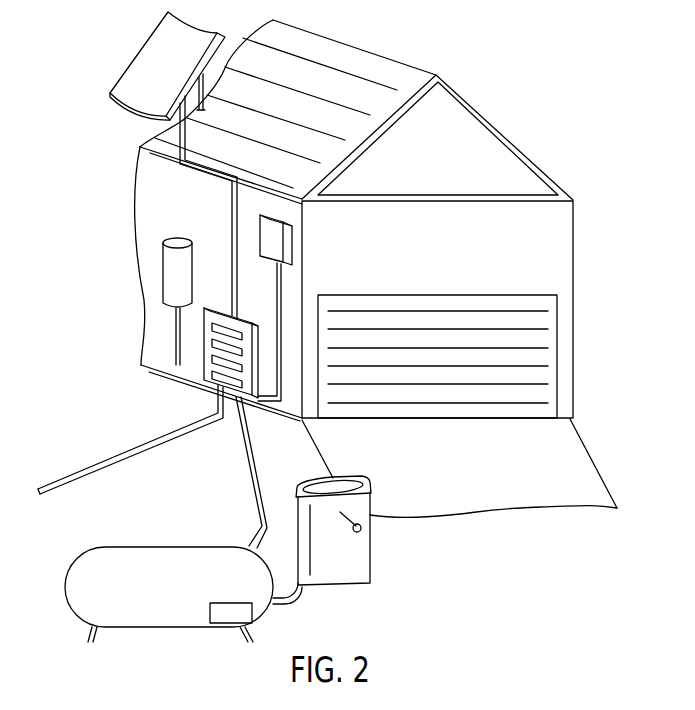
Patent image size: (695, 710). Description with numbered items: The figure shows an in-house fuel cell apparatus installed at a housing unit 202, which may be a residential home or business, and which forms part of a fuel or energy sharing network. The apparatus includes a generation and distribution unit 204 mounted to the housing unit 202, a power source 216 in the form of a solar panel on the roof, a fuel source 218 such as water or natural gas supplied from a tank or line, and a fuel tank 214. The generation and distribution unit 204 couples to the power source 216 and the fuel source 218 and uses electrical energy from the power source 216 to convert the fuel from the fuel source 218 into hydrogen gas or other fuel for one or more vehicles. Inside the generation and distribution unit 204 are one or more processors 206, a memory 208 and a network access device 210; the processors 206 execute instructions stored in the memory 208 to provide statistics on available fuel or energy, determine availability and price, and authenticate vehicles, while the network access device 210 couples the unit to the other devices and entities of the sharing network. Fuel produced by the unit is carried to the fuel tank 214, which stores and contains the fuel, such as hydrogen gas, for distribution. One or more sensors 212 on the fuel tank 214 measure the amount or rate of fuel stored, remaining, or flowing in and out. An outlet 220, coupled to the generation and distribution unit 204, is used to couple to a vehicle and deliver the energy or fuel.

The housing unit 202 is at (510, 141).
The generation and distribution unit 204 is at (180, 347).
The processors 206 is at (212, 327).
The memory 208 is at (212, 357).
The network access device 210 is at (220, 388).
The sensors 212 is at (231, 613).
The fuel tank 214 is at (141, 594).
The power source 216 is at (131, 63).
The fuel source 218 is at (164, 255).
The outlet 220 is at (309, 488).